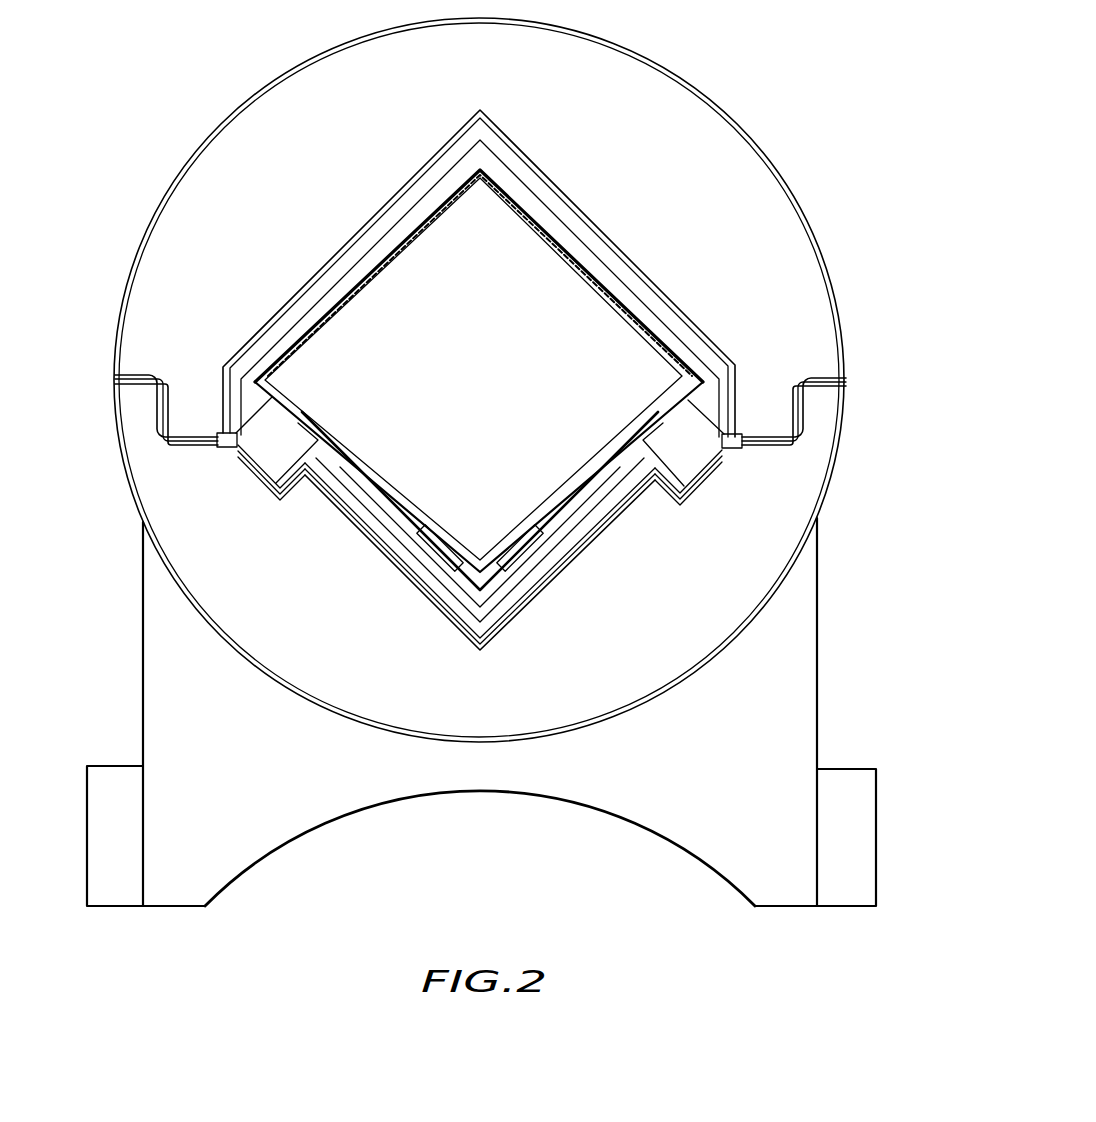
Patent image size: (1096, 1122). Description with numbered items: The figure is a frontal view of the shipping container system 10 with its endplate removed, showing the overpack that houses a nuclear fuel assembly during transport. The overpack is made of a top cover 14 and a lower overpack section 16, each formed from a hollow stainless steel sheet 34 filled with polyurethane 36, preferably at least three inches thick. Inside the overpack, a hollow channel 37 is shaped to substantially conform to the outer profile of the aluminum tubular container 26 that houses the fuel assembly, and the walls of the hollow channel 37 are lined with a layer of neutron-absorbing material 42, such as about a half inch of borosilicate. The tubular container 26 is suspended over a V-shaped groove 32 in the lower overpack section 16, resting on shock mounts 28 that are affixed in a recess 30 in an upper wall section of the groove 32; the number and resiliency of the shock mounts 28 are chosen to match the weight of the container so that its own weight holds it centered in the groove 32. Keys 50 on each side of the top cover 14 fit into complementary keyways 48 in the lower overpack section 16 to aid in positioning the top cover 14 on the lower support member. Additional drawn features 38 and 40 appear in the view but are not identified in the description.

The shipping container system 10 is at (484, 878).
The top cover 14 is at (786, 160).
The lower overpack section 16 is at (847, 476).
The tubular container 26 is at (596, 320).
The shock mounts 28 is at (238, 445).
The recess 30 is at (287, 490).
The V-shaped groove 32 is at (365, 497).
The stainless steel sheet 34 is at (684, 82).
The polyurethane 36 is at (170, 316).
The hollow channel 37 is at (515, 190).
The lead strip 38 is at (485, 652).
The pad 40 is at (477, 613).
The layer of neutron-absorbing material 42 is at (592, 238).
The keyways 48 is at (793, 450).
The keys 50 is at (765, 404).